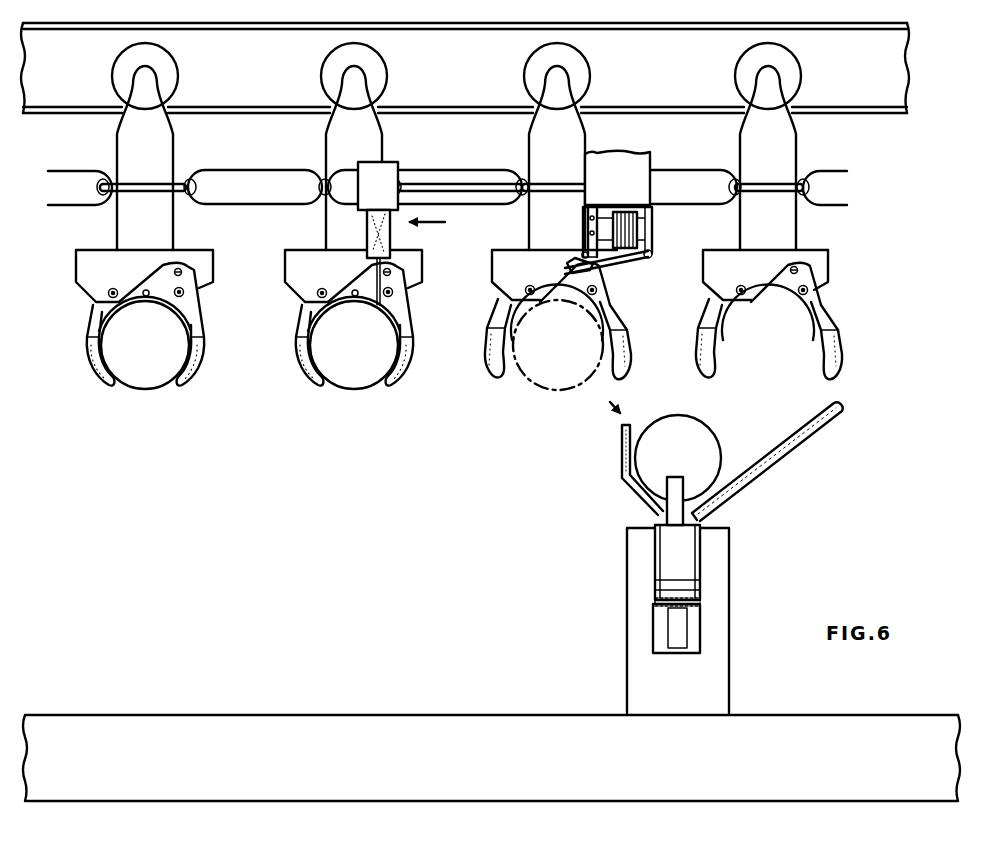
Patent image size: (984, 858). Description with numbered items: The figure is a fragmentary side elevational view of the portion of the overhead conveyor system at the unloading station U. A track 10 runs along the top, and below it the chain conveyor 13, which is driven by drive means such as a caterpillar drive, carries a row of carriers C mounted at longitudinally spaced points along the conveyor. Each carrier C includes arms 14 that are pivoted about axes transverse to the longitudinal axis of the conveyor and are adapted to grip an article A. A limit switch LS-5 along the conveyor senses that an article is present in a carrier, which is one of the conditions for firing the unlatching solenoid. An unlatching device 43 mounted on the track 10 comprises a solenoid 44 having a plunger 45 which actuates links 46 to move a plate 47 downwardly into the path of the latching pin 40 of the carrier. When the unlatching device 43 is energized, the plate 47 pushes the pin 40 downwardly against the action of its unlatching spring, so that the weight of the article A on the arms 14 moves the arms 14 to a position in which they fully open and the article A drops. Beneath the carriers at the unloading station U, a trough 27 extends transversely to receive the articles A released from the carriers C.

The track 10 is at (901, 74).
The chain conveyor 13 is at (848, 169).
The arms 14 is at (495, 365).
The trough 27 is at (820, 420).
The unlatching pin 40 is at (565, 275).
The unlatching device 43 is at (636, 174).
The solenoid 44 is at (645, 228).
The plunger 45 is at (604, 235).
The links 46 is at (586, 245).
The plate 47 is at (630, 280).
The article A is at (153, 383).
The carrier C is at (85, 287).
The unloading station U is at (772, 521).
The limit switch LS-5 is at (370, 229).